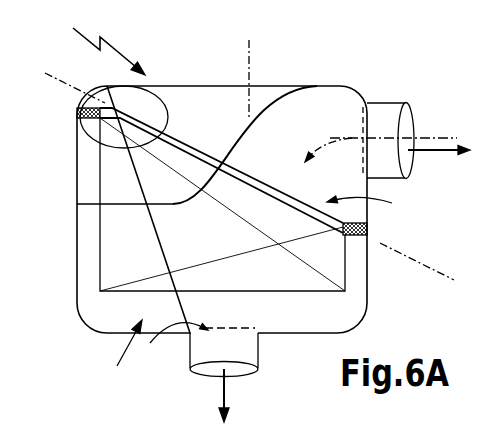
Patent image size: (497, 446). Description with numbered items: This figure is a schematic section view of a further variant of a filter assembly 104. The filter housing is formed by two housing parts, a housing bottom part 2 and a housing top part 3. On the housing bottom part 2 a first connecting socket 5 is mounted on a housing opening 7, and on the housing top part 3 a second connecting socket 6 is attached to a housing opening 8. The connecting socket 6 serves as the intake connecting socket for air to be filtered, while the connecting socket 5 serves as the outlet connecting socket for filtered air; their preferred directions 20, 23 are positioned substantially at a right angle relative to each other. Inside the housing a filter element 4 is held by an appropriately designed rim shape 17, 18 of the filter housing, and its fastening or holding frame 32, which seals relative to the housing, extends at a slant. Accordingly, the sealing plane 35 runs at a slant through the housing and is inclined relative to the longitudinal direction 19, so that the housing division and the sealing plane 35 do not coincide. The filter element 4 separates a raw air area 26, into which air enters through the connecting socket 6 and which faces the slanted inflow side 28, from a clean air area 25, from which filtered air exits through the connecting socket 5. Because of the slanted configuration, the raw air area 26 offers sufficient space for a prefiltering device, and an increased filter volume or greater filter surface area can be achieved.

The filter assembly 104 is at (100, 38).
The housing bottom part 2 is at (88, 320).
The housing top part 3 is at (269, 103).
The filter element 4 is at (339, 271).
The first connecting socket 5 is at (250, 350).
The second connecting socket 6 is at (385, 115).
The housing opening 7 is at (175, 346).
The housing opening 8 is at (358, 121).
The rim shape 17 is at (88, 148).
The rim shape 18 is at (165, 126).
The longitudinal direction 19 is at (249, 53).
The preferred direction 20 is at (433, 138).
The preferred direction 23 is at (222, 395).
The clean air area 25 is at (122, 360).
The raw air area 26 is at (195, 107).
The inflow side 28 is at (370, 203).
The holding frame 32 is at (370, 224).
The sealing plane 35 is at (422, 262).